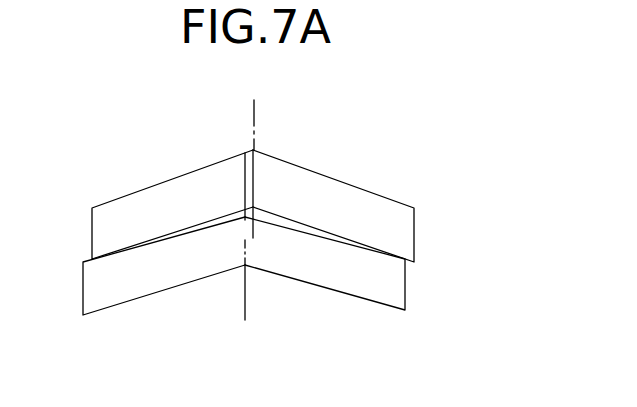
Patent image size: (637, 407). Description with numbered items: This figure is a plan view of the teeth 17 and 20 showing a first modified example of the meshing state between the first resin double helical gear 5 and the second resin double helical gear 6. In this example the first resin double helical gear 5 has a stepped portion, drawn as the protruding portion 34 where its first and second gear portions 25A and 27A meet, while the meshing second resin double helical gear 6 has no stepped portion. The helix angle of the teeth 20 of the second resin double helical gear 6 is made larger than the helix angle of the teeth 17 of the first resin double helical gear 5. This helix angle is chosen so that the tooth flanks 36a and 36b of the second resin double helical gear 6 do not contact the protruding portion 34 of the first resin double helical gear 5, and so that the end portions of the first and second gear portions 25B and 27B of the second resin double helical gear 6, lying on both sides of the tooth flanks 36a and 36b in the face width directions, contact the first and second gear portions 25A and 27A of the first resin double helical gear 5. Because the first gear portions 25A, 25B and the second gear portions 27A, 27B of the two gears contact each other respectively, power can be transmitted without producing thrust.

The second resin double helical gear 6 is at (400, 202).
The teeth 20 is at (160, 223).
The first gear portion 25B is at (100, 230).
The second gear portion 27B is at (408, 234).
The protruding portion 34 is at (273, 222).
The first resin double helical gear 5 is at (123, 303).
The first gear portion 25A is at (163, 290).
The second gear portion 27A is at (390, 293).
The tooth flank 36a is at (223, 217).
The tooth flank 36b is at (273, 222).
The teeth 17 is at (355, 272).